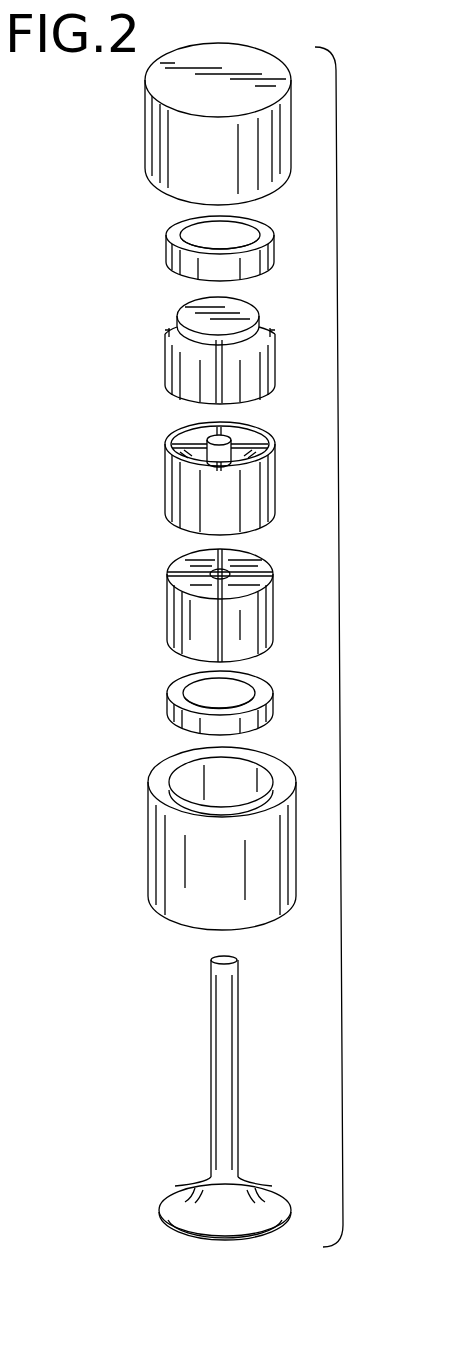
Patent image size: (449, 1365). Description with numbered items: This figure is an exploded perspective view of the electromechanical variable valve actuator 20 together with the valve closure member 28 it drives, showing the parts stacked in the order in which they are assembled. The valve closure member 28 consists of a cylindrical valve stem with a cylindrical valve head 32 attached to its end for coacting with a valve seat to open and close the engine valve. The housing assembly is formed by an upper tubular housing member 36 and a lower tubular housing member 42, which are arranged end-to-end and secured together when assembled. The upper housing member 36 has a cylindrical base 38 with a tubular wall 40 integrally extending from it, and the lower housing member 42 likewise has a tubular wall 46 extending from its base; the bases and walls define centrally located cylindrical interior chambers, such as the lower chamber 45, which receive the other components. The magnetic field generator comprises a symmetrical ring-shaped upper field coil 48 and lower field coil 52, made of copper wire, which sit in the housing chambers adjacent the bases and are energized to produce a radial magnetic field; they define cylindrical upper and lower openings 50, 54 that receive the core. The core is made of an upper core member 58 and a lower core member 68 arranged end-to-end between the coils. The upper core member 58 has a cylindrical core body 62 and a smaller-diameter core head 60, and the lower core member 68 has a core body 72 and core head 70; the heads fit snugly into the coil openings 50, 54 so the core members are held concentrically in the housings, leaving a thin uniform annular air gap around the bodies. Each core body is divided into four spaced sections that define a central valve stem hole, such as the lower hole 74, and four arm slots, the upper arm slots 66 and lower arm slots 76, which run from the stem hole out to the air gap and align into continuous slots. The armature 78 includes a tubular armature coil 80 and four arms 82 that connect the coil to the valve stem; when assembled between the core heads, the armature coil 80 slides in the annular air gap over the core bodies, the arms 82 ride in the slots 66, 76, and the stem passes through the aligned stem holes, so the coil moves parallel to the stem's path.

The electromechanical variable valve actuator 20 is at (292, 48).
The valve closure member 28 is at (203, 1098).
The valve head 32 is at (165, 1203).
The upper tubular housing member 36 is at (181, 106).
The base of upper housing member 38 is at (203, 57).
The tubular wall of upper housing member 40 is at (172, 135).
The lower tubular housing member 42 is at (217, 837).
The interior chamber of lower housing member 45 is at (250, 775).
The tubular wall of lower housing member 46 is at (285, 860).
The upper field coil 48 is at (213, 245).
The upper opening of field coil 50 is at (245, 232).
The lower field coil 52 is at (211, 701).
The lower opening of field coil 54 is at (235, 683).
The upper core member 58 is at (221, 339).
The upper core head 60 is at (238, 310).
The upper core body 62 is at (265, 365).
The upper arm slots 66 is at (272, 330).
The lower core member 68 is at (218, 593).
The lower core head 70 is at (240, 657).
The lower core body 72 is at (272, 605).
The lower valve stem hole 74 is at (230, 570).
The lower arm slots 76 is at (218, 548).
The armature 78 is at (220, 465).
The armature coil 80 is at (268, 492).
The arms 82 is at (218, 425).